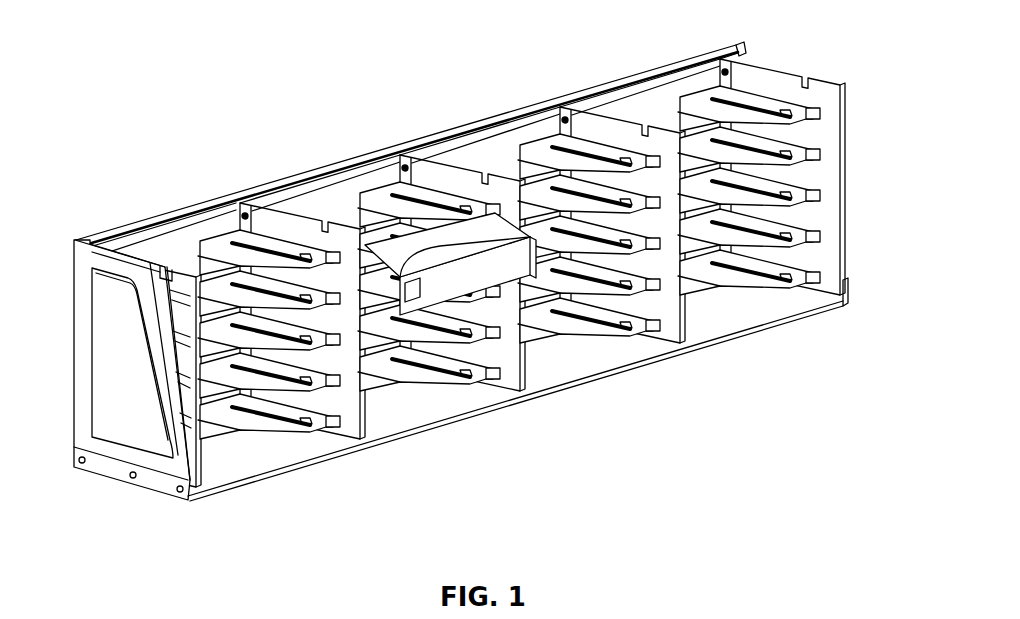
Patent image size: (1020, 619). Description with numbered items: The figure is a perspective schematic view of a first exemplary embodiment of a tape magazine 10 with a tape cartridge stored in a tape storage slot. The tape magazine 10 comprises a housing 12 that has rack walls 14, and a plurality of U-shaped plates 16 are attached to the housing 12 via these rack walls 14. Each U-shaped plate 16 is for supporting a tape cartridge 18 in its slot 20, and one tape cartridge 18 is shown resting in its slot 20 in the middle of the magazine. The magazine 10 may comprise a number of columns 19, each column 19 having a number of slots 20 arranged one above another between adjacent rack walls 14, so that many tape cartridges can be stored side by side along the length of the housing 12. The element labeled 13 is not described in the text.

The tape magazine 10 is at (122, 115).
The housing 12 is at (130, 221).
The top rail 13 is at (207, 198).
The rack walls 14 is at (437, 153).
The U-shaped plates 16 is at (778, 194).
The tape cartridge 18 is at (468, 276).
The columns 19 is at (324, 478).
The slot 20 is at (383, 230).